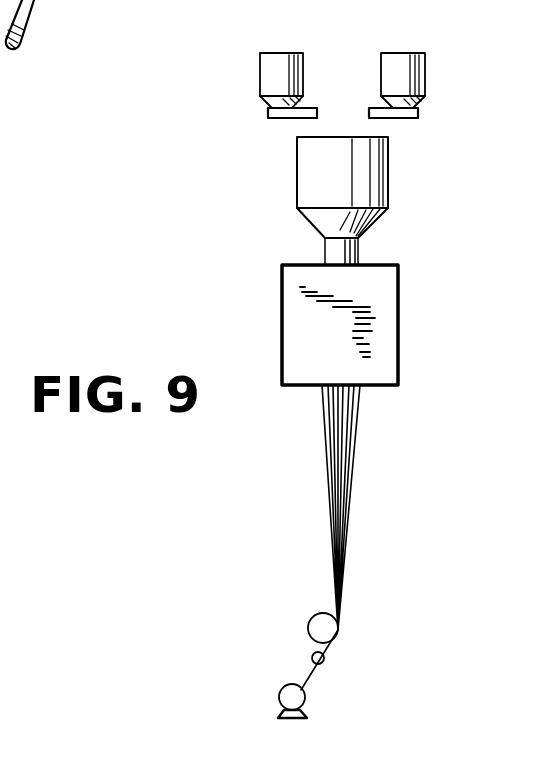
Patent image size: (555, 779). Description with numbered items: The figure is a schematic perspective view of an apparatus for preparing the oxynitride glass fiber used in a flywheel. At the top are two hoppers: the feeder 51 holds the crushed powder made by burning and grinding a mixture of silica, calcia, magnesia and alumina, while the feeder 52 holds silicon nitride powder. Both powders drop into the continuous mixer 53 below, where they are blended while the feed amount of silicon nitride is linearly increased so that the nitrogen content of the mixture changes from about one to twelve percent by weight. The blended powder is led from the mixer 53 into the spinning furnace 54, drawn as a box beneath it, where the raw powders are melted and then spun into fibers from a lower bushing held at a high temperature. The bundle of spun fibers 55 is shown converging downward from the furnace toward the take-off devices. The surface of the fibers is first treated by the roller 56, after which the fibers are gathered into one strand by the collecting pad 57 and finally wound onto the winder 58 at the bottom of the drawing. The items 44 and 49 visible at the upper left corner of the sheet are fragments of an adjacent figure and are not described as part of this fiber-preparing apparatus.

The element of adjacent figure 44 is at (113, 0).
The element of adjacent figure 49 is at (50, 0).
The feeder 51 is at (267, 53).
The feeder 52 is at (404, 53).
The continuous mixer 53 is at (388, 186).
The spinning furnace 54 is at (398, 331).
The extruded filaments 55 is at (348, 515).
The roller 56 is at (332, 636).
The collecting pad 57 is at (322, 662).
The winder 58 is at (297, 700).